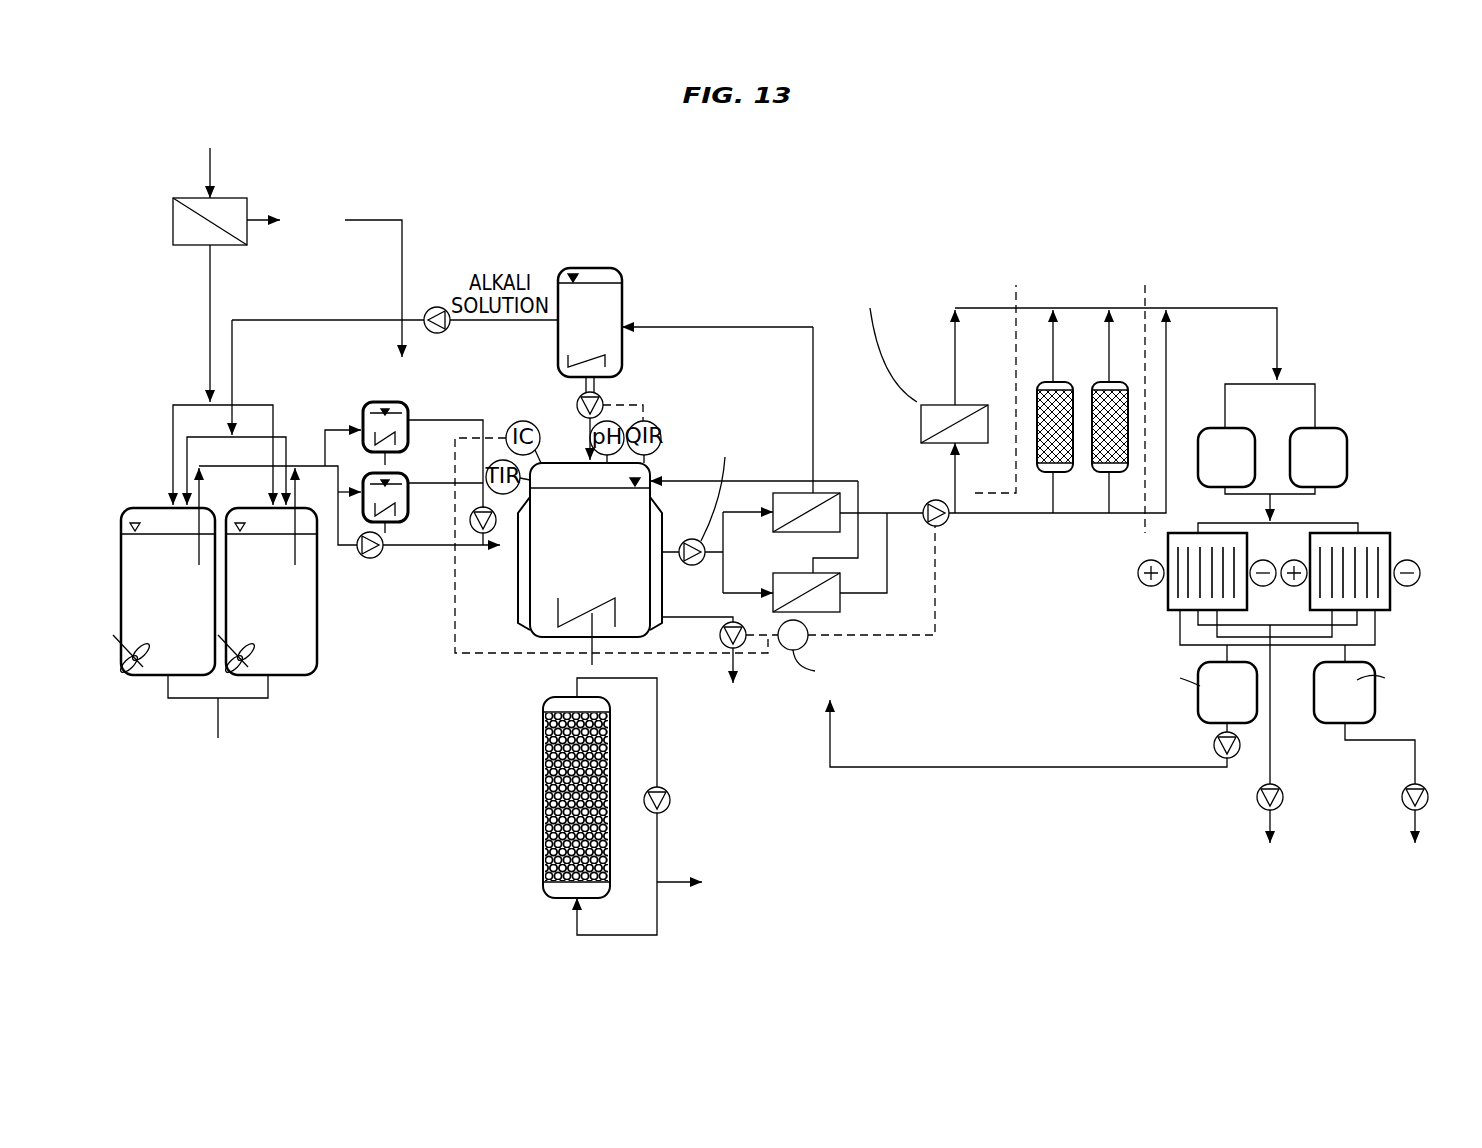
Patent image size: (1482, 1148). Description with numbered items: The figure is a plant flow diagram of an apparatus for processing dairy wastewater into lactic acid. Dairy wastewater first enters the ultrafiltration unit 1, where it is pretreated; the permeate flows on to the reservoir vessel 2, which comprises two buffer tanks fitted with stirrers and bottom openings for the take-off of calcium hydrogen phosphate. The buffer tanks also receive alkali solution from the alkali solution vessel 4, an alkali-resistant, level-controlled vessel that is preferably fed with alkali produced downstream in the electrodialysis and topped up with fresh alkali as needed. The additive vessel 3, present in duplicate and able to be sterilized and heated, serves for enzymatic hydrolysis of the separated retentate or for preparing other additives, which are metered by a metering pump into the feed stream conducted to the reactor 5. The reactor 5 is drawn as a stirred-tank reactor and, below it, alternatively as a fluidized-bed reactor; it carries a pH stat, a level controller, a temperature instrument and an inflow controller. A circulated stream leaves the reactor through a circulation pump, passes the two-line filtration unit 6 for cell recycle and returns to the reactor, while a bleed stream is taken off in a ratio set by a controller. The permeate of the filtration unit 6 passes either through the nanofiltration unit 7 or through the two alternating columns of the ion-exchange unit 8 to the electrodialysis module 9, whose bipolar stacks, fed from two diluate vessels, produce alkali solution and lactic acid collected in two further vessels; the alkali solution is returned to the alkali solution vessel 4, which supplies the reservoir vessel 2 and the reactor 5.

The ultrafiltration unit 1 is at (272, 251).
The reservoir vessel 2 is at (237, 611).
The additive vessel 3 is at (405, 486).
The alkali solution vessel 4 is at (685, 380).
The reactor 5 is at (699, 560).
The filtration unit 6 is at (969, 461).
The nanofiltration unit 7 is at (1029, 398).
The ion-exchange unit 8 is at (1060, 390).
The electrodialysis module 9 is at (1150, 652).